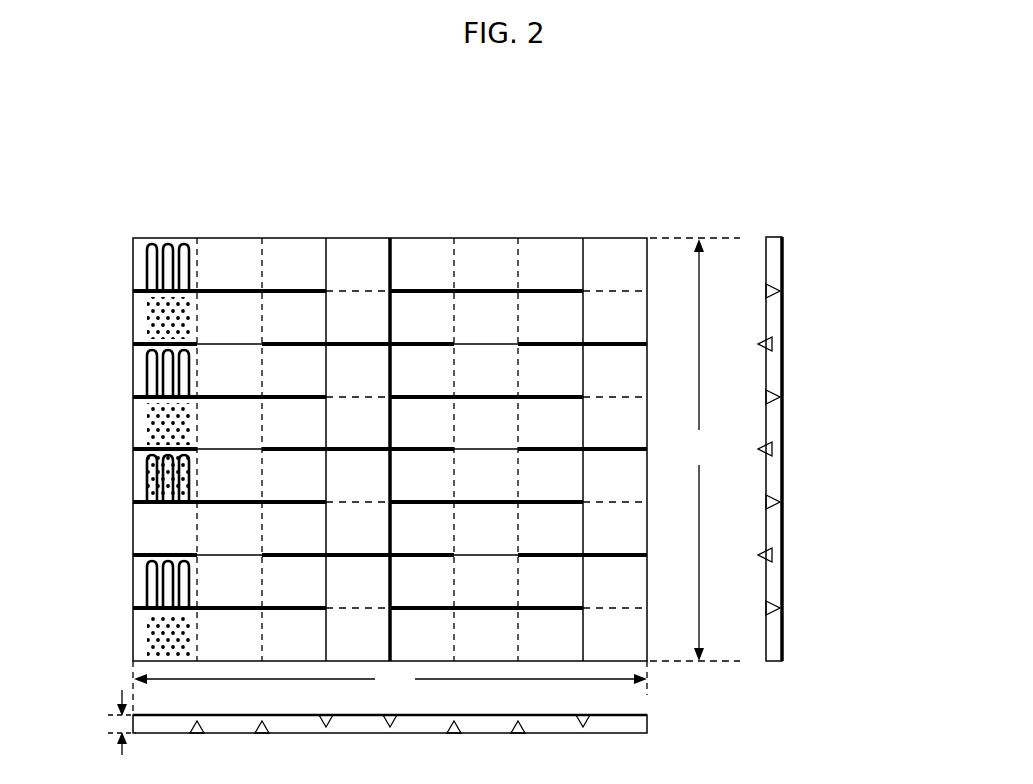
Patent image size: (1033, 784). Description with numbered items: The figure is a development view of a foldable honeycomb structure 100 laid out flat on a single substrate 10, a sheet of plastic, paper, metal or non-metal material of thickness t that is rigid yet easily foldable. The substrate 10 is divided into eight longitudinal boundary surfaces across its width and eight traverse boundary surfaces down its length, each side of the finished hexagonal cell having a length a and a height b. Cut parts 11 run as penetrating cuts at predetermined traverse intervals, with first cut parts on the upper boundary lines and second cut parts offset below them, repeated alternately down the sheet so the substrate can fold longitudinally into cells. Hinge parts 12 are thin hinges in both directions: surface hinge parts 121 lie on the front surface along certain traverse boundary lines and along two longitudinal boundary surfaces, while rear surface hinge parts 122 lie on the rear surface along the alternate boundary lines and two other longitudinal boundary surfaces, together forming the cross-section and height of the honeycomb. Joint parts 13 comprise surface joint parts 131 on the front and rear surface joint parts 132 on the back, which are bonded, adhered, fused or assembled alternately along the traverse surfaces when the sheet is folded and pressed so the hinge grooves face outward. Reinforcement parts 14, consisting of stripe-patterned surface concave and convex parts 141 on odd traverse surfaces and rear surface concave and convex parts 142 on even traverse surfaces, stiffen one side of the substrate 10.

The foldable honeycomb structure 100 is at (82, 182).
The substrate 10 is at (648, 219).
The cut parts 11 is at (533, 287).
The hinge parts 12 is at (486, 397).
The joint parts 13 is at (390, 403).
The surface hinge part 121 is at (227, 342).
The rear surface hinge part 122 is at (364, 284).
The surface joint part 131 is at (331, 254).
The rear surface joint part 132 is at (258, 248).
The reinforcement parts 14 is at (116, 450).
The surface concave and convex parts 141 is at (150, 470).
The rear surface concave and convex parts 142 is at (150, 512).